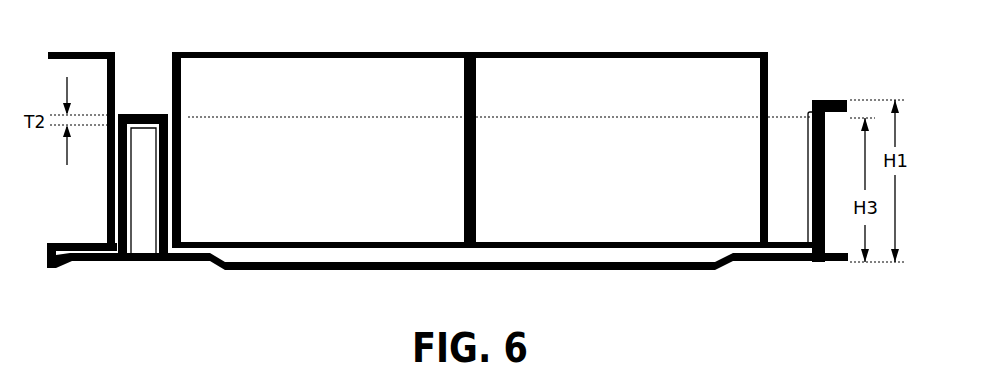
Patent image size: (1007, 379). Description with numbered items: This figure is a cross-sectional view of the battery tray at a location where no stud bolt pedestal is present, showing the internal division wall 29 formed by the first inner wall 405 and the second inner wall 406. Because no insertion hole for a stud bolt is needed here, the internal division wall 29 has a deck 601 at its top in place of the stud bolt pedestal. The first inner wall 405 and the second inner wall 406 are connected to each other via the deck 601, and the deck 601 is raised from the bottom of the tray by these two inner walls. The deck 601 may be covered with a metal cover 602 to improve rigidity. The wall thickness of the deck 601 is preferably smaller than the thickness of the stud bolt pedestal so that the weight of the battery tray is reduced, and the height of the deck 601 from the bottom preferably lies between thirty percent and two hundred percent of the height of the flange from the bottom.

The internal division wall 29 is at (143, 176).
The metal cover 602 is at (148, 113).
The deck 601 is at (143, 130).
The second inner wall 406 is at (122, 190).
The first inner wall 405 is at (166, 205).